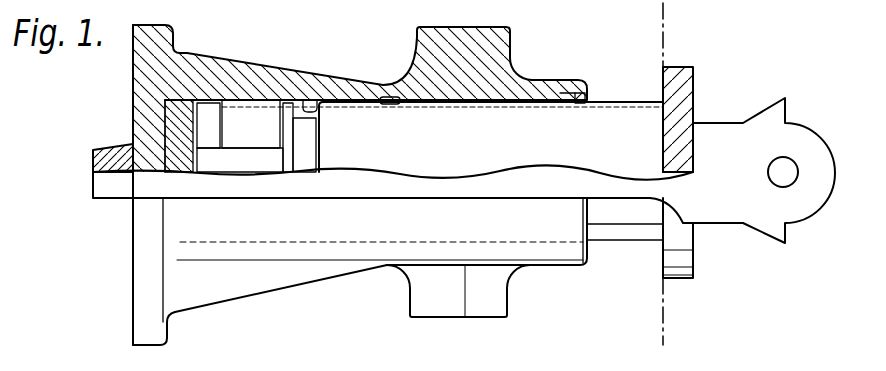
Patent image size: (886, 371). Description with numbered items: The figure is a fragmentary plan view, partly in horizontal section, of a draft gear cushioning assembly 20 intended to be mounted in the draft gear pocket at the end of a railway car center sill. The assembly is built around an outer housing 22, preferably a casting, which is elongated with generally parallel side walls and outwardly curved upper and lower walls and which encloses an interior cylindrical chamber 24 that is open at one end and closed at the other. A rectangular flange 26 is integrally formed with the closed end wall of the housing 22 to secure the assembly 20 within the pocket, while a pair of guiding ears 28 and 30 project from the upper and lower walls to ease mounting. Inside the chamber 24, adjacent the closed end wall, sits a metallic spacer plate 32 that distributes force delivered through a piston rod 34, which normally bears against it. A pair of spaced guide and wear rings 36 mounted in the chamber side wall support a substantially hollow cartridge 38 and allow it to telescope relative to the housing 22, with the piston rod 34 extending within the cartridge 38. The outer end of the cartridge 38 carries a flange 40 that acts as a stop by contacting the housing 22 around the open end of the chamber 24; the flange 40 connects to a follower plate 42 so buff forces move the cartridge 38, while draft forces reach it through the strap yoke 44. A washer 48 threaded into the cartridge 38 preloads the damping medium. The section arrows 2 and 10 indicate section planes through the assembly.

The cushioning assembly 20 is at (568, 53).
The outer housing 22 is at (257, 70).
The interior cylindrical chamber 24 is at (302, 97).
The rectangular flange 26 is at (160, 26).
The guiding ear 28 is at (487, 36).
The guiding ear 30 is at (498, 297).
The spacer plate 32 is at (173, 130).
The piston rod 34 is at (213, 168).
The guide and wear rings 36 is at (387, 98).
The cartridge 38 is at (642, 132).
The flange 40 is at (685, 252).
The follower plate 42 is at (768, 132).
The strap yoke 44 is at (160, 192).
The washer 48 is at (307, 147).
The section line 2- 2 is at (307, 165).
The section line 10- 10 is at (668, 23).